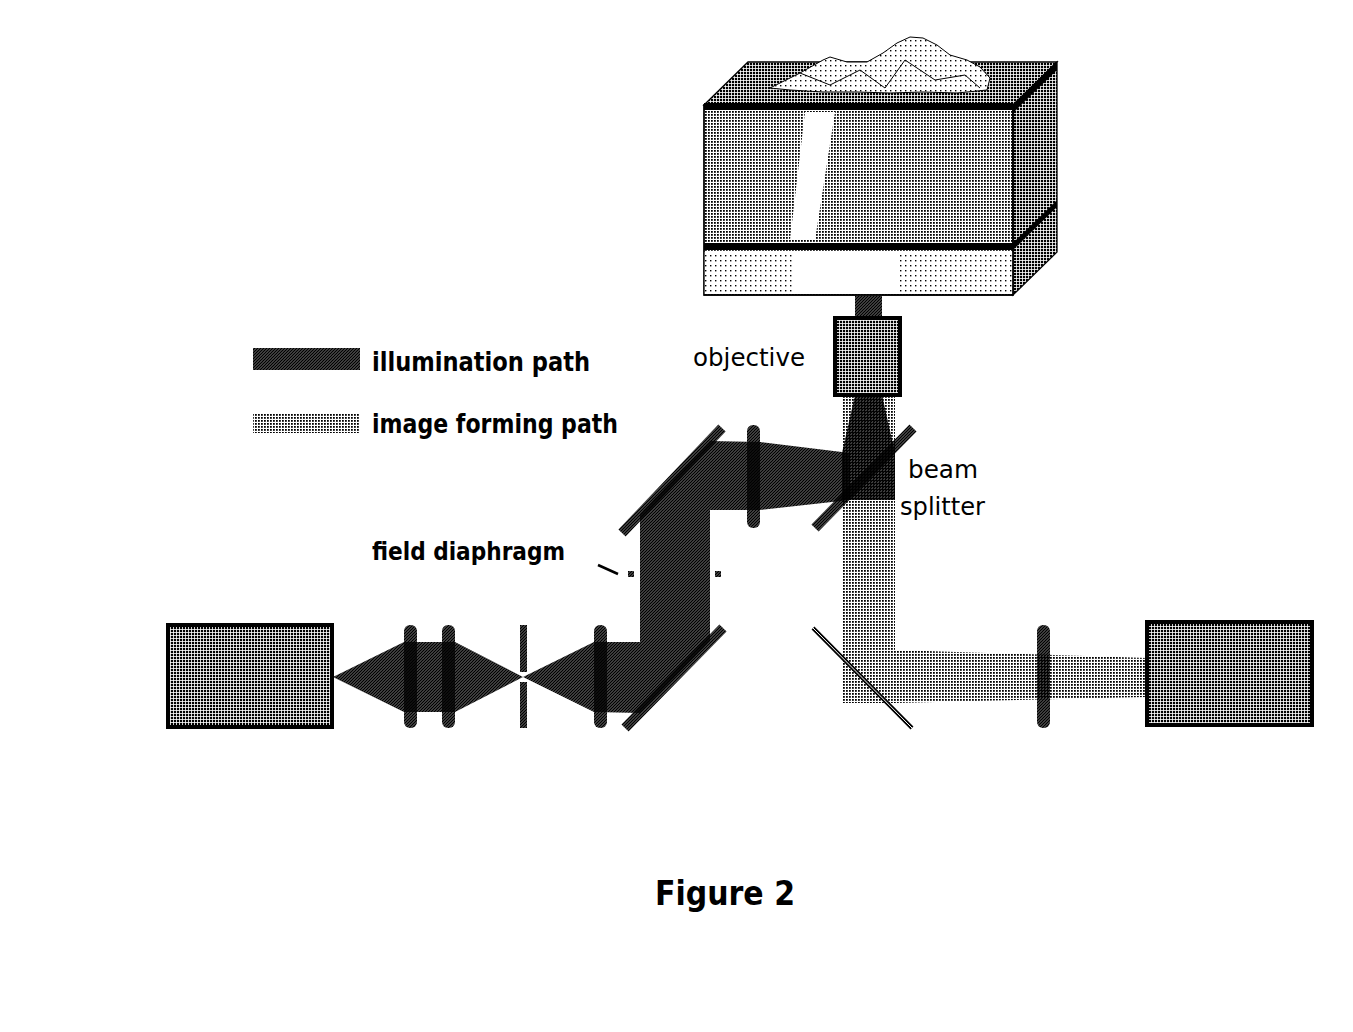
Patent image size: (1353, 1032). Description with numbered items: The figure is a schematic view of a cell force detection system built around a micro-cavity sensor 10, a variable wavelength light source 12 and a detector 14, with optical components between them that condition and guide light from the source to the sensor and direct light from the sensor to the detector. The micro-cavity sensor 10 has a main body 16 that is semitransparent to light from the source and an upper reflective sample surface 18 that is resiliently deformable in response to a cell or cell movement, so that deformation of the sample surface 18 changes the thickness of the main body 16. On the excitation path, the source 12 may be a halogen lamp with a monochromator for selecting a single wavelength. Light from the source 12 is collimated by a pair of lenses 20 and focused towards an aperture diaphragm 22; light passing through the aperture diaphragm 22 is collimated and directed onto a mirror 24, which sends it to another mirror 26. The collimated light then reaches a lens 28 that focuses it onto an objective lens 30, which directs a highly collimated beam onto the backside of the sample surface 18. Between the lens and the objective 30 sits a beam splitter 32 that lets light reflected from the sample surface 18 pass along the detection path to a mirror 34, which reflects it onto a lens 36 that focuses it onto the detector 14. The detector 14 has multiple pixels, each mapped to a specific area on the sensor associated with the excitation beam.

The micro-cavity sensor 10 is at (874, 166).
The variable wavelength light source 12 is at (245, 625).
The detector 14 is at (1277, 622).
The main body 16 is at (1030, 146).
The upper reflective sample surface 18 is at (1030, 91).
The pair of lenses 20 is at (450, 730).
The aperture diaphragm 22 is at (524, 740).
The mirror 24 is at (672, 682).
The mirror 26 is at (673, 477).
The lens 28 is at (755, 530).
The objective lens 30 is at (903, 357).
The beam splitter 32 is at (930, 478).
The mirror 34 is at (855, 672).
The lens 36 is at (1043, 730).